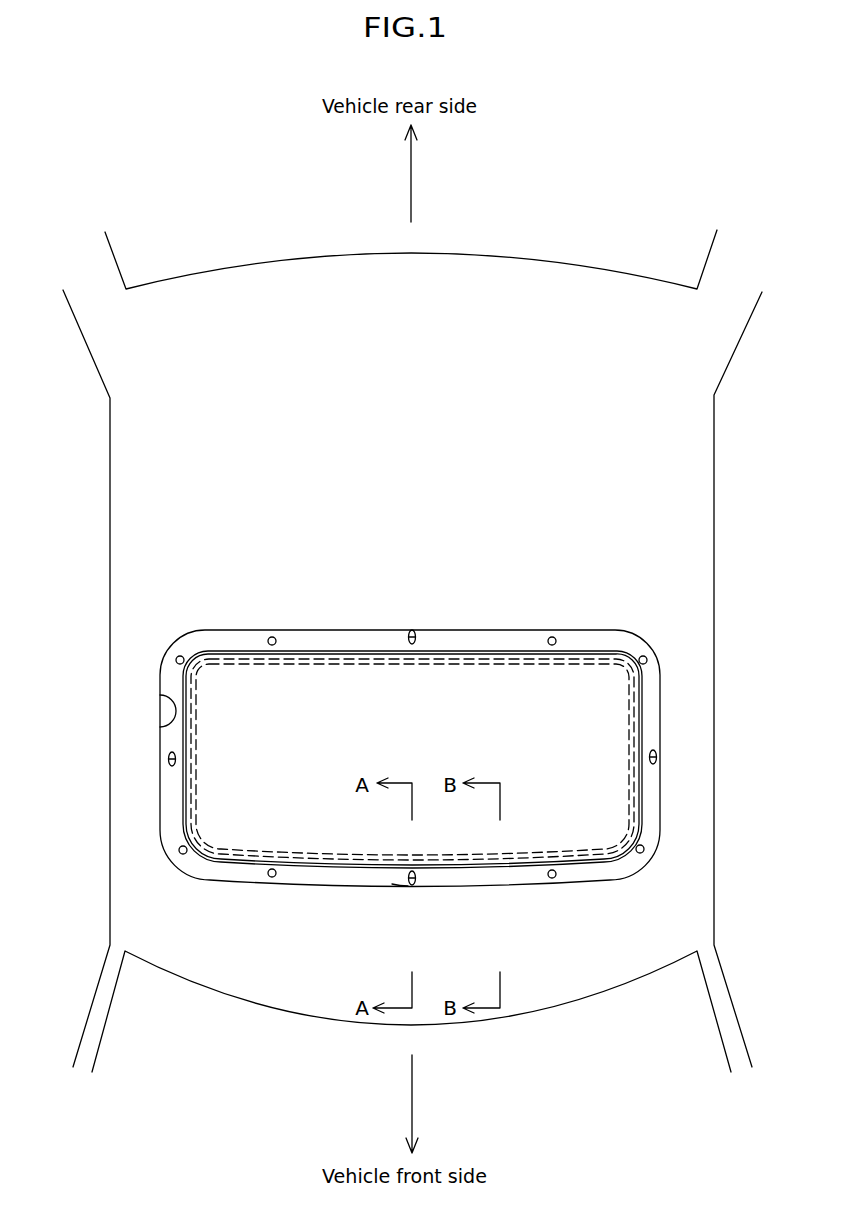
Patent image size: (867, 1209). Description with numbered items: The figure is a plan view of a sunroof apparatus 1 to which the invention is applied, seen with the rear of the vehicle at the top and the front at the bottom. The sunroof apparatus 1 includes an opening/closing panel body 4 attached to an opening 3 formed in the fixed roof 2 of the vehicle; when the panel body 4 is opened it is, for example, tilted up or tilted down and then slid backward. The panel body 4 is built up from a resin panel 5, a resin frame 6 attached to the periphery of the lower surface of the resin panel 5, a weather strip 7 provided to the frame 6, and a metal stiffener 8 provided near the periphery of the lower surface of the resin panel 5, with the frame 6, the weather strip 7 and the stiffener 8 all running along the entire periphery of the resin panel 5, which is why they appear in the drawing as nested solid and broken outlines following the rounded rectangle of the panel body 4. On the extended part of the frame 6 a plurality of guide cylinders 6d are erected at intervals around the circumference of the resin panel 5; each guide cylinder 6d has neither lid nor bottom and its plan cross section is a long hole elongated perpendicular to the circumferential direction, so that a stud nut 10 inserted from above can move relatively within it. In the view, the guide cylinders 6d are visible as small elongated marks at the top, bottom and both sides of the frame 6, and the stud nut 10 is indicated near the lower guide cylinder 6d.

The sunroof apparatus 1 is at (168, 611).
The fixed roof 2 is at (150, 445).
The opening 3 is at (160, 695).
The panel body 4 is at (490, 749).
The resin panel 5 is at (602, 702).
The frame 6 is at (630, 728).
The guide cylinder 6d is at (417, 632).
The weather strip 7 is at (645, 682).
The stiffener 8 is at (479, 759).
The stud nut 10 is at (398, 884).